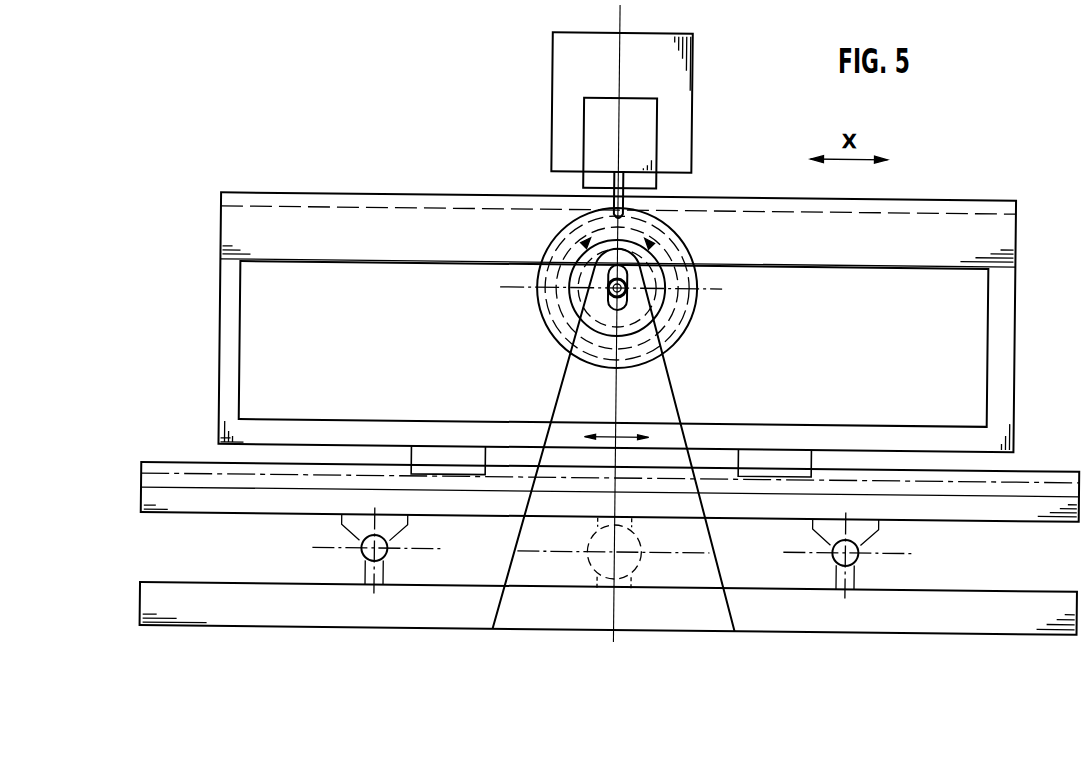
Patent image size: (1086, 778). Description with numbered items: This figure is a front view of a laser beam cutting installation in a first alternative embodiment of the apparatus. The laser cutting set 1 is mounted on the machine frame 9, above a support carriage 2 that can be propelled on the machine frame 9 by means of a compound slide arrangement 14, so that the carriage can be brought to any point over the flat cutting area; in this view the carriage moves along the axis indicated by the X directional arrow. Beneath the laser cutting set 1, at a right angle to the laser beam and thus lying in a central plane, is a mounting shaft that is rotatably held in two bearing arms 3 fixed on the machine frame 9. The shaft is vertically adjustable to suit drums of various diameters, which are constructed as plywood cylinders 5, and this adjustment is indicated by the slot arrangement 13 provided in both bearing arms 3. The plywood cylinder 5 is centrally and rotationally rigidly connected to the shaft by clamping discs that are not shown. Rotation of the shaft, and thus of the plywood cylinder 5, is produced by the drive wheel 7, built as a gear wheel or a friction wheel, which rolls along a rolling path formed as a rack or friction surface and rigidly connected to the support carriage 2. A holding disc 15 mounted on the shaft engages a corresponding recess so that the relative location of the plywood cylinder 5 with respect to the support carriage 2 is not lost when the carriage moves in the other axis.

The laser cutting set 1 is at (625, 181).
The support carriage 2 is at (1003, 337).
The bearing arm 3 is at (672, 387).
The plywood cylinder 5 is at (679, 302).
The drive wheel 7 is at (688, 322).
The machine frame 9 is at (672, 62).
The slot arrangement 13 is at (611, 305).
The compound slide arrangement 14 is at (1080, 470).
The holding disc 15 is at (573, 297).